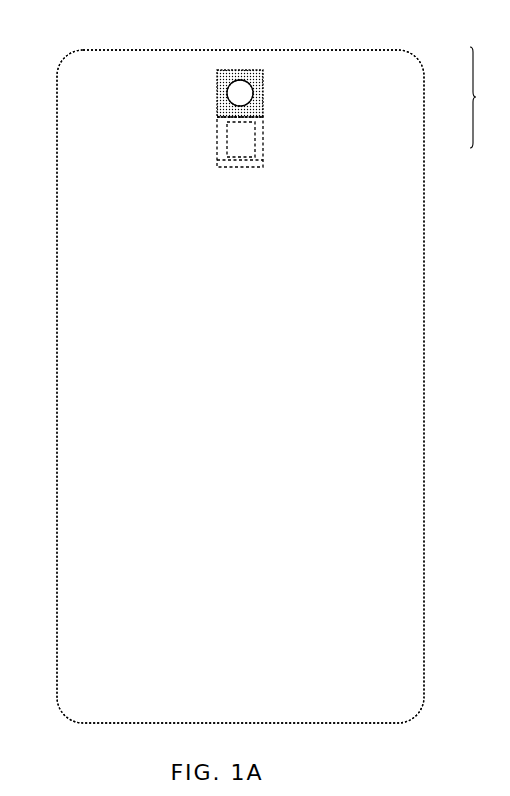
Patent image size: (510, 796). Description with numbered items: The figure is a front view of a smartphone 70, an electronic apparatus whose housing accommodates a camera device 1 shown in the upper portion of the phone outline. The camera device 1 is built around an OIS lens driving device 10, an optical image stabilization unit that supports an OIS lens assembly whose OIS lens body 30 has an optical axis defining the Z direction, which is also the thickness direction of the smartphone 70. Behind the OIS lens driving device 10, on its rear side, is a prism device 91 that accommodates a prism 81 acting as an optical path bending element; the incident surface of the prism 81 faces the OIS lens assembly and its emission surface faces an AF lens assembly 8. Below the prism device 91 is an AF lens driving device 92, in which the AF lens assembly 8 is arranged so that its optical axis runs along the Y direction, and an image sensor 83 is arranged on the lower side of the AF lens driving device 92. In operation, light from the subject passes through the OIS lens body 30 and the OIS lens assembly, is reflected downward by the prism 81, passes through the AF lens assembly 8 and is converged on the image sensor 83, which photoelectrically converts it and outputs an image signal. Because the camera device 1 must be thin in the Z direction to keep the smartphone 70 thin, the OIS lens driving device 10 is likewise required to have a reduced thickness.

The camera device 1 is at (478, 97).
The OIS lens driving device 10 is at (423, 50).
The OIS lens body 30 is at (243, 80).
The smartphone 70 is at (57, 515).
The AF lens assembly 8 is at (263, 144).
The prism 81 is at (263, 100).
The image sensor 83 is at (263, 162).
The prism device 91 is at (263, 78).
The AF lens driving device 92 is at (263, 124).